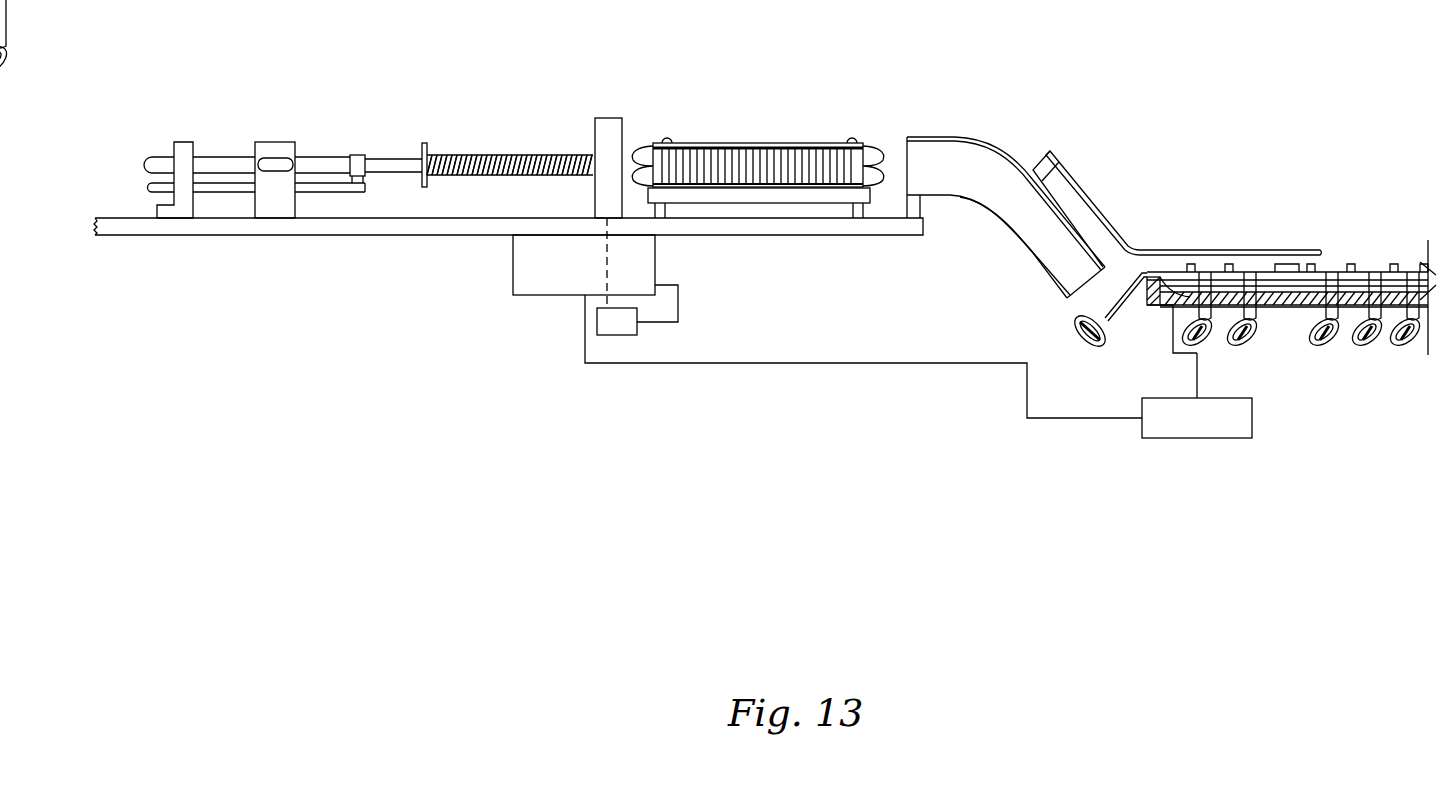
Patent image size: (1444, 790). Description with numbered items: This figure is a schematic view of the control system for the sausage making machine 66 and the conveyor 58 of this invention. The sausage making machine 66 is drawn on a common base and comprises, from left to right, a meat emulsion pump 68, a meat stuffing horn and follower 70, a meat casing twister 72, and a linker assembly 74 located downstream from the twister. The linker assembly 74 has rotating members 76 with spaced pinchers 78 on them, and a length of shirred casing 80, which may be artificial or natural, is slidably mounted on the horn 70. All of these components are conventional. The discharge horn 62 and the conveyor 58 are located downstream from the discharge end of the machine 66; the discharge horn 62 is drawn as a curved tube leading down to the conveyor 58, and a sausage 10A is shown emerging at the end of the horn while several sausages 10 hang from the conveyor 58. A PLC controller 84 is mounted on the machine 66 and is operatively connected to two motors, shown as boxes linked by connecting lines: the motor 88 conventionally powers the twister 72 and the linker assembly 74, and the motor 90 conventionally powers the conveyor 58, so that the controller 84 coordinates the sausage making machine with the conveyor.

The sausage 10 is at (1257, 337).
The sausage 10A is at (1074, 334).
The conveyor 58 is at (1366, 228).
The discharge horn 62 is at (962, 138).
The sausage making machine 66 is at (400, 120).
The meat emulsion pump 68 is at (275, 141).
The meat stuffing horn and follower 70 is at (448, 135).
The meat casing twister 72 is at (608, 117).
The linker assembly 74 is at (760, 110).
The rotating members 76 is at (801, 150).
The pinchers 78 is at (639, 156).
The shirred casing 80 is at (506, 168).
The PLC controller 84 is at (523, 297).
The motor 88 is at (638, 329).
The motor 90 is at (1212, 437).